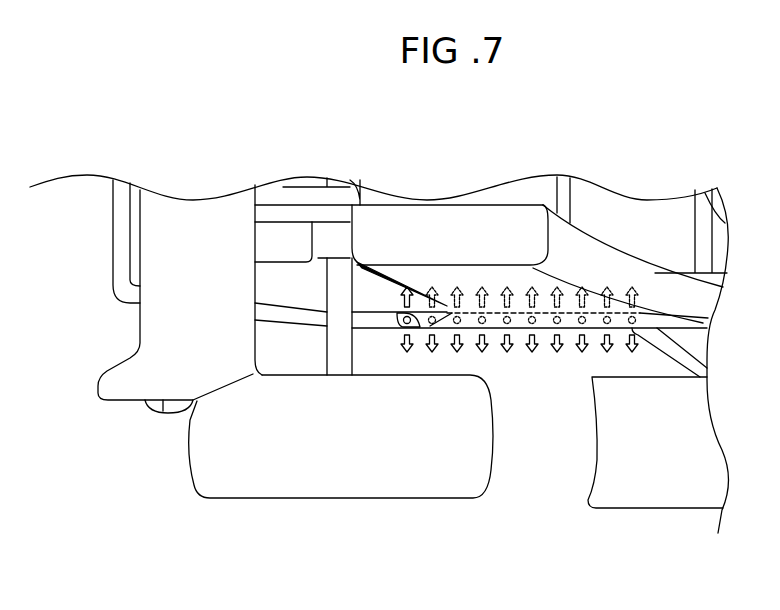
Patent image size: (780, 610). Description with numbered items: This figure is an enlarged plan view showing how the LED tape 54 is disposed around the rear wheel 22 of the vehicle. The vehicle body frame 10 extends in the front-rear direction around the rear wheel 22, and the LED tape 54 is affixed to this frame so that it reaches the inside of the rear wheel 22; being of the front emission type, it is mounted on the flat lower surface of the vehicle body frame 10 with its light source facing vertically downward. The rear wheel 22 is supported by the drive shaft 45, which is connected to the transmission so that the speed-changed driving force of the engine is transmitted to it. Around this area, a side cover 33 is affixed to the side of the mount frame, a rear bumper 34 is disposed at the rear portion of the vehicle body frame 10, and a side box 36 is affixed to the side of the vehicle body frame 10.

The vehicle body frame 10 is at (383, 320).
The rear wheel 22 is at (288, 473).
The side cover 33 is at (415, 232).
The rear bumper 34 is at (120, 228).
The side box 36 is at (653, 472).
The drive shaft 45 is at (333, 292).
The LED tape 54 is at (500, 305).